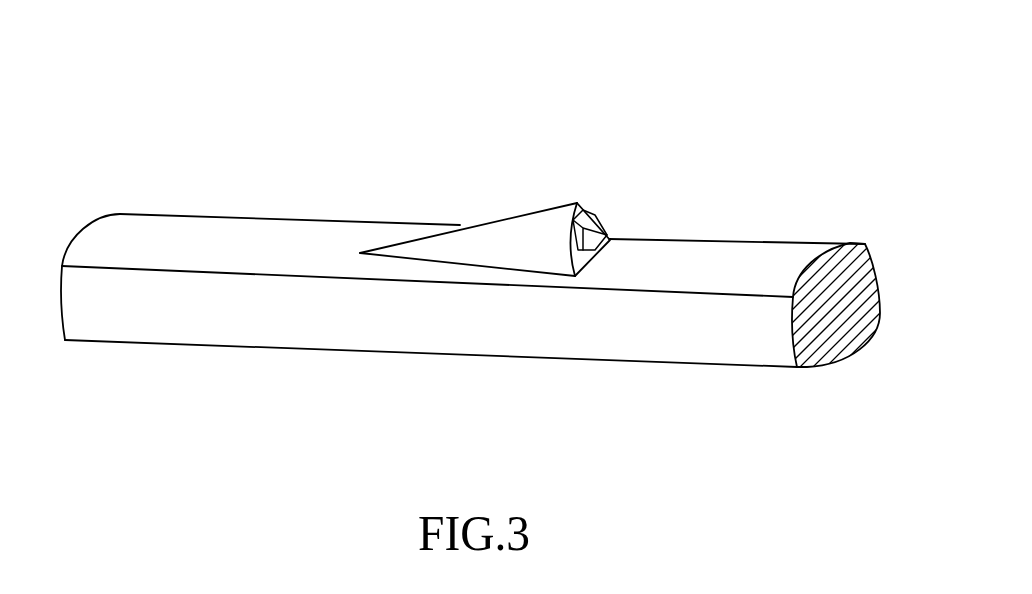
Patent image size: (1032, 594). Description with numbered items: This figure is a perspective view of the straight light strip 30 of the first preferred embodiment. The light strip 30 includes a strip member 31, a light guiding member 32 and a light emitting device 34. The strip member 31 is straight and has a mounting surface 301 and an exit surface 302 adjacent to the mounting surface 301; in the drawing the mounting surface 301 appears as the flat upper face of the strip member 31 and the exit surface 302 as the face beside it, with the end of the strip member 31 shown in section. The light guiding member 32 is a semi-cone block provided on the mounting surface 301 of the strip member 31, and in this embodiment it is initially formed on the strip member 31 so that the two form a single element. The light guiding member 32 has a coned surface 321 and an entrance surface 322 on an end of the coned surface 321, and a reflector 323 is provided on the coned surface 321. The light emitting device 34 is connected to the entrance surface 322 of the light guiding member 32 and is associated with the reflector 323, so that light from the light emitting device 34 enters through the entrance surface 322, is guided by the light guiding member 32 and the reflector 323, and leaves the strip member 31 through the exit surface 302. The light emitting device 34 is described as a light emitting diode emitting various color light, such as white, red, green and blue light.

The light strip 30 is at (538, 257).
The mounting surface 301 is at (120, 232).
The exit surface 302 is at (107, 322).
The strip member 31 is at (847, 313).
The light guiding member 32 is at (524, 247).
The coned surface 321 is at (532, 228).
The entrance surface 322 is at (598, 253).
The reflector 323 is at (587, 262).
The light emitting device 34 is at (599, 226).